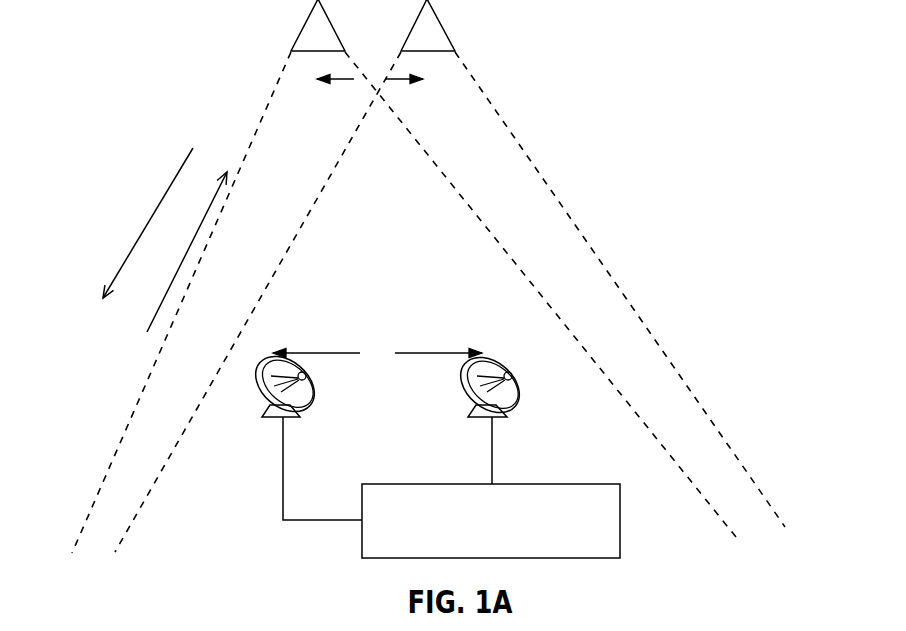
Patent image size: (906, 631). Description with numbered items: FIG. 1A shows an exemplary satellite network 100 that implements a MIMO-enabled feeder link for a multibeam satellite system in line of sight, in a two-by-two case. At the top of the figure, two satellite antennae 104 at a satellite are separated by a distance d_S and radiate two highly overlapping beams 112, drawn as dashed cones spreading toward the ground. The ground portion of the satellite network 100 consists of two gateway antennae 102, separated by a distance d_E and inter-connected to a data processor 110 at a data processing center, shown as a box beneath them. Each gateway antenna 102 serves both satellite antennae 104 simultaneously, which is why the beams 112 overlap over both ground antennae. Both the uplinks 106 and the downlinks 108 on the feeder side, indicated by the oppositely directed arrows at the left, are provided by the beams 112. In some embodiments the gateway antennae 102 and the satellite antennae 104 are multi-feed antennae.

The satellite network 100 is at (724, 100).
The gateway antenna 102 is at (305, 379).
The satellite antenna 104 is at (302, 46).
The uplink 106 is at (226, 175).
The downlink 108 is at (145, 227).
The data processor 110 is at (580, 537).
The beam 112 is at (600, 305).